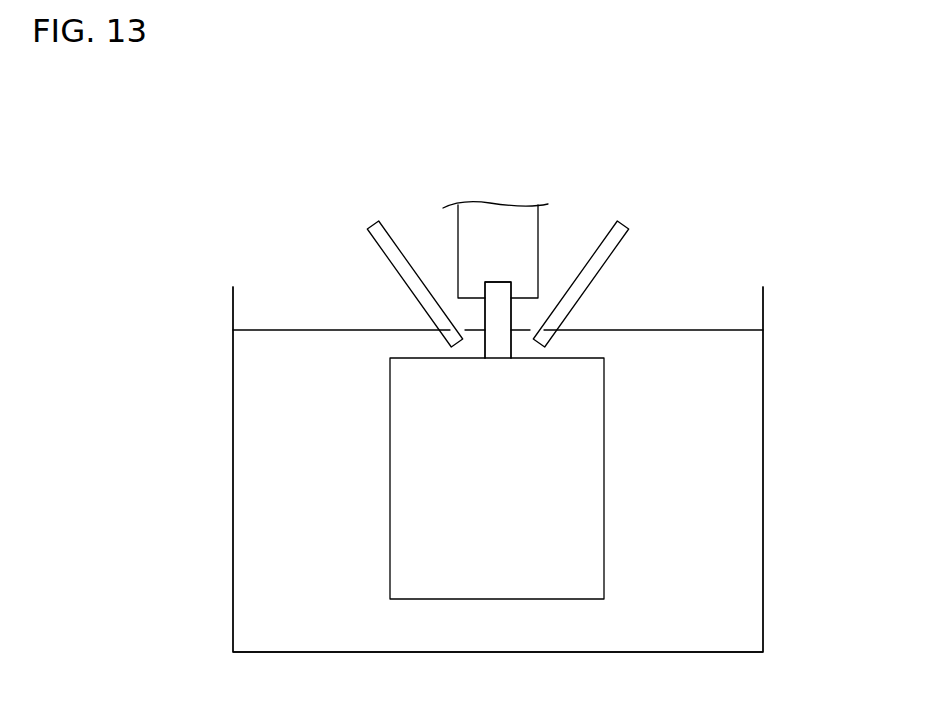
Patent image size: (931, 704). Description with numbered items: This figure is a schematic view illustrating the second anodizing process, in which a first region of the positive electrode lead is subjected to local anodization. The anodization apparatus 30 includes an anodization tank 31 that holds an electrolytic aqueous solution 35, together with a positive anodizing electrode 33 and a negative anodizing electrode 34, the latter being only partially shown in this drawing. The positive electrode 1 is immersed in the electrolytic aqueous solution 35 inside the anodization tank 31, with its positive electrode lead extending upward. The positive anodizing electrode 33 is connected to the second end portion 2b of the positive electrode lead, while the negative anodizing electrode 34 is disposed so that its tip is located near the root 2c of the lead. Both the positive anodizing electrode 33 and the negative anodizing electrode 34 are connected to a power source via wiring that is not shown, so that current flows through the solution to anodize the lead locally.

The anodization apparatus 30 is at (741, 148).
The anodization tank 31 is at (763, 298).
The electrolytic aqueous solution 35 is at (285, 347).
The positive electrode 1 is at (583, 463).
The second end portion 2b is at (492, 292).
The root 2c is at (498, 358).
The positive anodizing electrode 33 is at (517, 221).
The negative anodizing electrode 34 is at (380, 221).